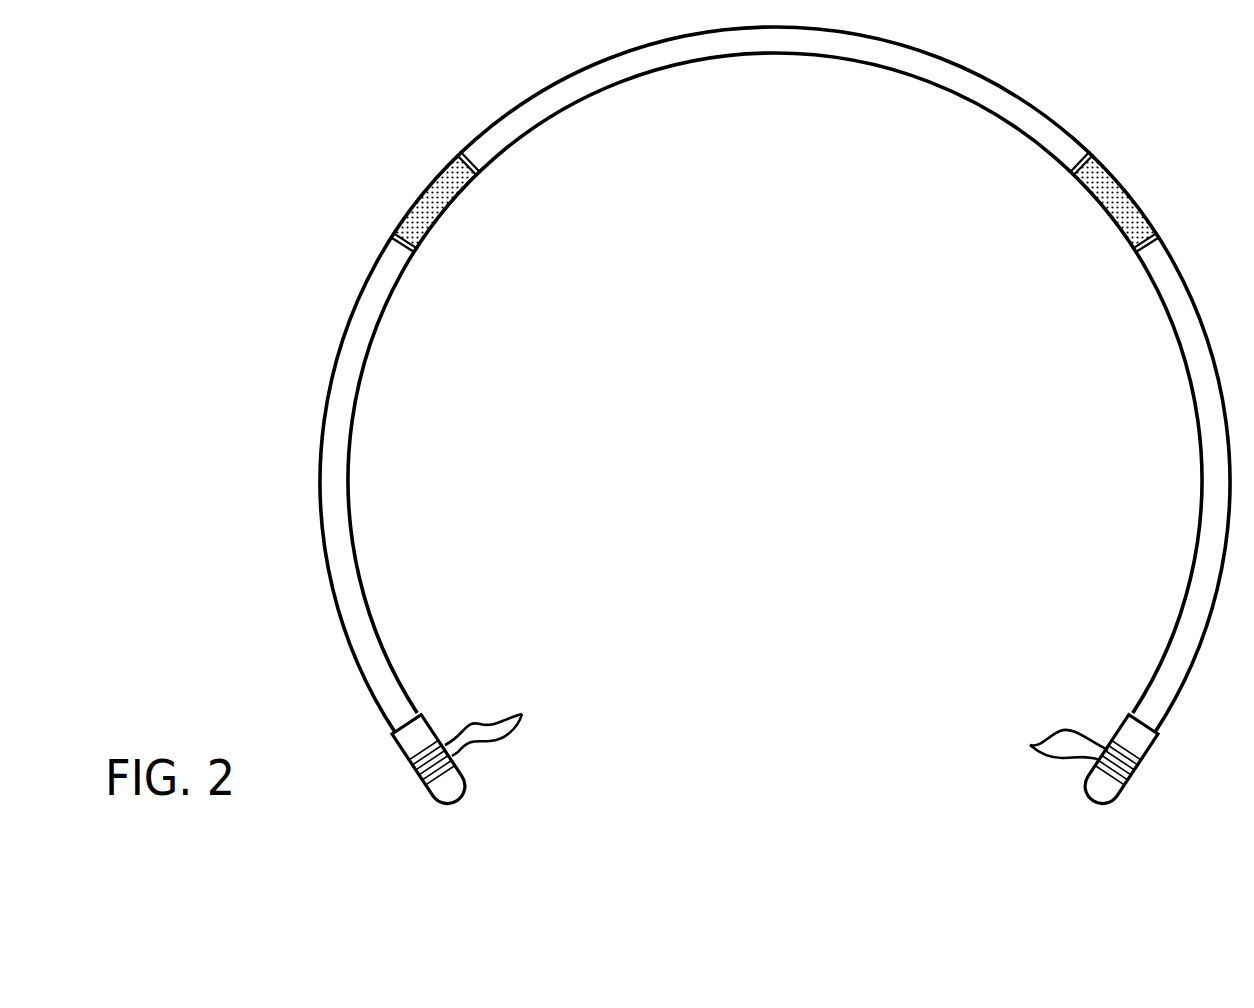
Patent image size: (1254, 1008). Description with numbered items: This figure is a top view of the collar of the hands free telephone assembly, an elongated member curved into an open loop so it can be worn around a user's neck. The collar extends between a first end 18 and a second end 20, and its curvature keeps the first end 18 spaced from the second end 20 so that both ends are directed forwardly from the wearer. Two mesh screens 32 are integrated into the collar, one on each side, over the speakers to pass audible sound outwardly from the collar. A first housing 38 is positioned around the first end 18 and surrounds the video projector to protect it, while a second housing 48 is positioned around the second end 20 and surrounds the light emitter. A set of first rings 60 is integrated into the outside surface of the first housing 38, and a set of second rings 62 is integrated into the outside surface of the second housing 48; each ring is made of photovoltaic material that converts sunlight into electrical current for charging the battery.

The first end 18 is at (407, 748).
The second end 20 is at (1151, 744).
The mesh screen 32 is at (433, 197).
The first housing 38 is at (432, 788).
The second housing 48 is at (1115, 736).
The first rings 60 is at (506, 723).
The second rings 62 is at (1047, 740).